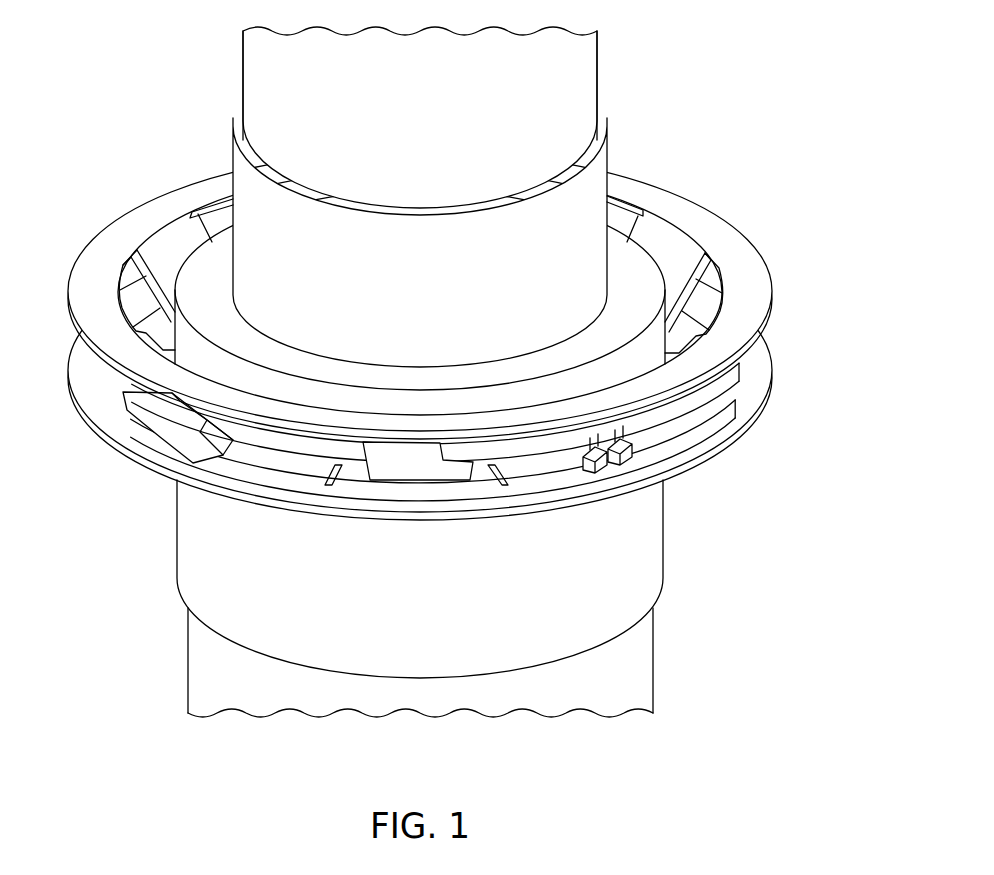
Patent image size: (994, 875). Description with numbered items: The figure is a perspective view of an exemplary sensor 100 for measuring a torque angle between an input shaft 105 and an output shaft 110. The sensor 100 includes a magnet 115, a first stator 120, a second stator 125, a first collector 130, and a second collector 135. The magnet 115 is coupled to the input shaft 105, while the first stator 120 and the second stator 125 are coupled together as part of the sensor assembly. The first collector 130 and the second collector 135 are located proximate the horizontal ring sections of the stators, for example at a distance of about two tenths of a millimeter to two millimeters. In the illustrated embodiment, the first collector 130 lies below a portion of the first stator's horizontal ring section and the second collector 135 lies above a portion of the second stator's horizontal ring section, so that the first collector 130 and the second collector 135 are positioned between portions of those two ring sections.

The sensor 100 is at (440, 398).
The input shaft 105 is at (587, 66).
The output shaft 110 is at (628, 664).
The magnet 115 is at (641, 272).
The first stator 120 is at (747, 226).
The second stator 125 is at (86, 446).
The first collector 130 is at (738, 372).
The second collector 135 is at (713, 433).